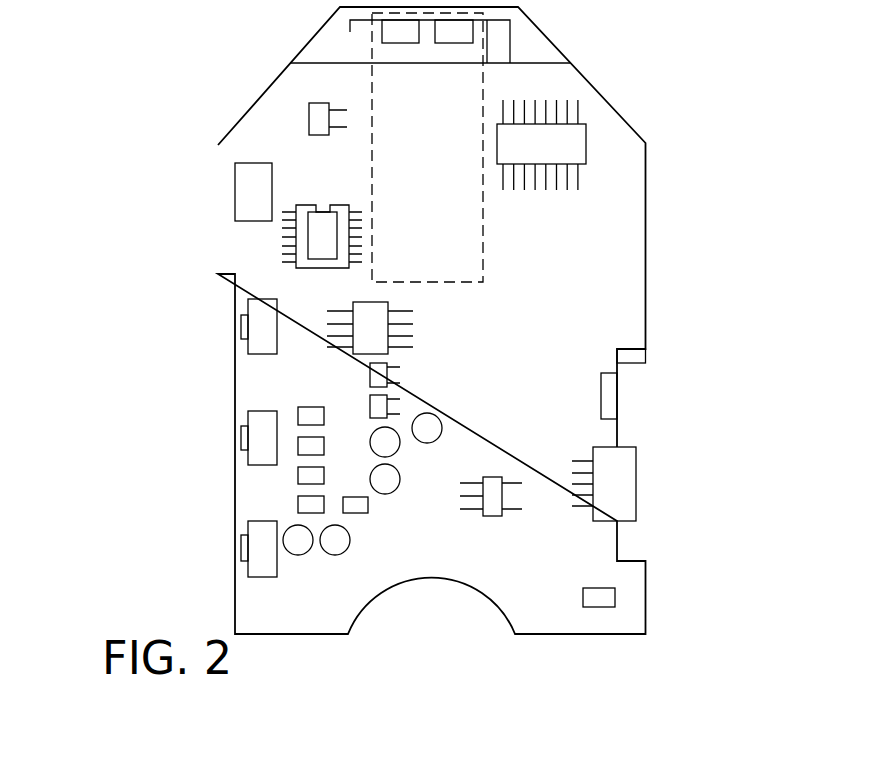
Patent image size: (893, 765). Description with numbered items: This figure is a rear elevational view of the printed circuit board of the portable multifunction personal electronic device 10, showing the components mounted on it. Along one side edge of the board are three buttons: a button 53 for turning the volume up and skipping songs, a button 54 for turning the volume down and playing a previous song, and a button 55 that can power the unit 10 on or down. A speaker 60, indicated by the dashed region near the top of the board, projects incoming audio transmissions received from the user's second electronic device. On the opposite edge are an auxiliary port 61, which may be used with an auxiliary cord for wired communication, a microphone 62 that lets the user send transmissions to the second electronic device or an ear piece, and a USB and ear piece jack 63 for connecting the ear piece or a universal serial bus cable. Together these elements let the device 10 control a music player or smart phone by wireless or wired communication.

The portable multifunction personal electronic device 10 is at (173, 132).
The button for turning the volume up and skipping songs 53 is at (255, 308).
The button for turning the volume down and playing a previous song 54 is at (255, 419).
The power button 55 is at (255, 528).
The speaker 60 is at (475, 243).
The auxiliary port 61 is at (639, 357).
The microphone 62 is at (612, 403).
The USB and ear piece jack 63 is at (633, 483).